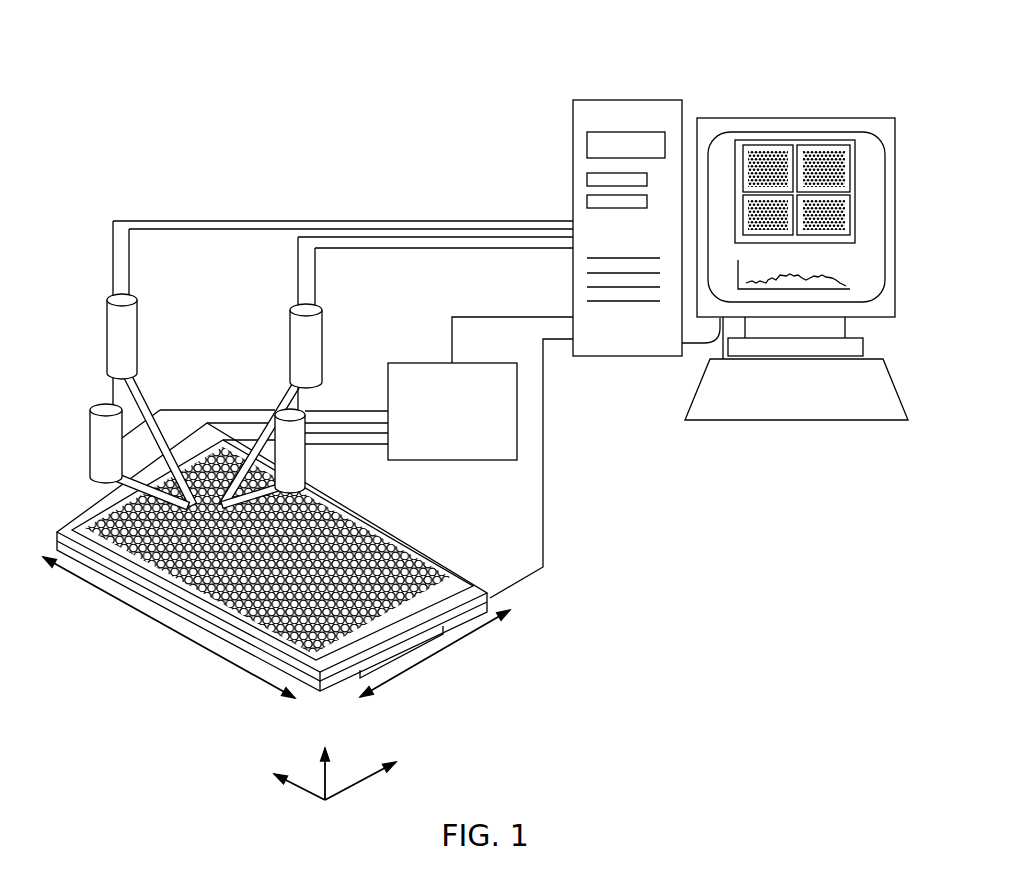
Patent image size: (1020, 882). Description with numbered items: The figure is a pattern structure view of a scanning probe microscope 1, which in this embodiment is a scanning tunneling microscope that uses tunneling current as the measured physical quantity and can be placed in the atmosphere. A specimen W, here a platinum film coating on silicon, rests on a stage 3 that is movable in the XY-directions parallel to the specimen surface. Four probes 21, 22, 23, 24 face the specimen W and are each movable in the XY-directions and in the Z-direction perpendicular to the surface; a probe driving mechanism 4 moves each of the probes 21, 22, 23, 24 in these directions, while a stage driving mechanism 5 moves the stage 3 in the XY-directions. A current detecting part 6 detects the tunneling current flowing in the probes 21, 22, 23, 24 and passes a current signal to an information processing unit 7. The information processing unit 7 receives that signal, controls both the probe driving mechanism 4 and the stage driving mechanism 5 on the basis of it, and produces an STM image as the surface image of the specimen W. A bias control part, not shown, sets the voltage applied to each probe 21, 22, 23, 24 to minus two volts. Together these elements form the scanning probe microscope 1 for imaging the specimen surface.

The scanning probe microscope 1 is at (255, 146).
The stage 3 is at (170, 617).
The probe driving mechanism 4 is at (107, 305).
The stage driving mechanism 5 is at (398, 652).
The current detecting part 6 is at (452, 462).
The information processing unit 7 is at (629, 100).
The probe 21 is at (318, 489).
The probe 22 is at (246, 440).
The probe 23 is at (182, 410).
The probe 24 is at (118, 485).
The specimen W is at (355, 522).